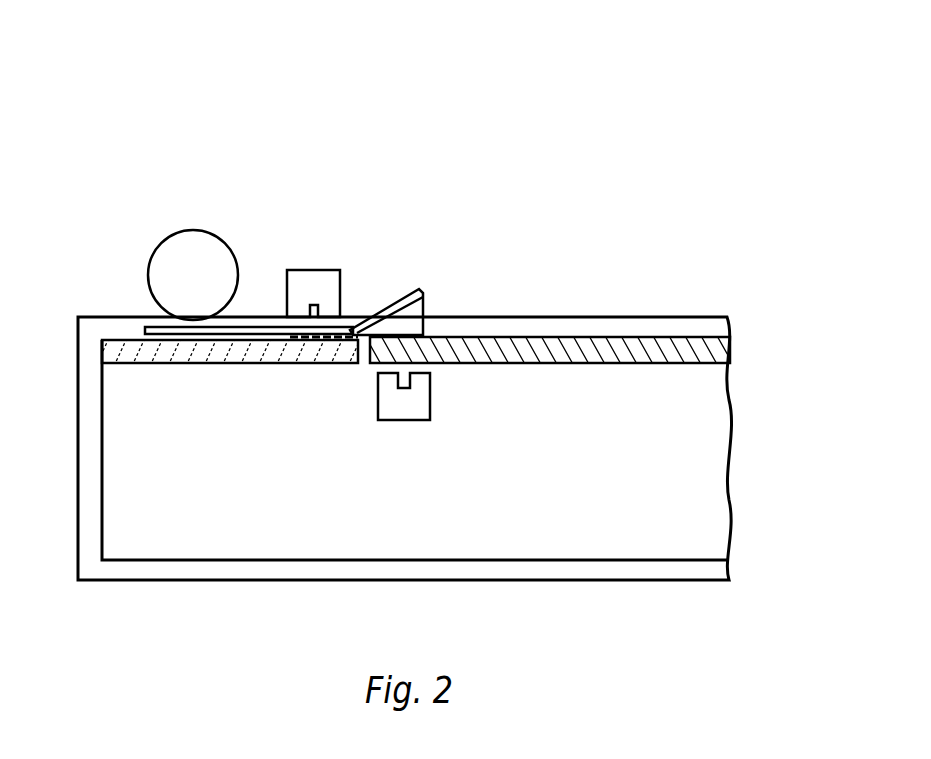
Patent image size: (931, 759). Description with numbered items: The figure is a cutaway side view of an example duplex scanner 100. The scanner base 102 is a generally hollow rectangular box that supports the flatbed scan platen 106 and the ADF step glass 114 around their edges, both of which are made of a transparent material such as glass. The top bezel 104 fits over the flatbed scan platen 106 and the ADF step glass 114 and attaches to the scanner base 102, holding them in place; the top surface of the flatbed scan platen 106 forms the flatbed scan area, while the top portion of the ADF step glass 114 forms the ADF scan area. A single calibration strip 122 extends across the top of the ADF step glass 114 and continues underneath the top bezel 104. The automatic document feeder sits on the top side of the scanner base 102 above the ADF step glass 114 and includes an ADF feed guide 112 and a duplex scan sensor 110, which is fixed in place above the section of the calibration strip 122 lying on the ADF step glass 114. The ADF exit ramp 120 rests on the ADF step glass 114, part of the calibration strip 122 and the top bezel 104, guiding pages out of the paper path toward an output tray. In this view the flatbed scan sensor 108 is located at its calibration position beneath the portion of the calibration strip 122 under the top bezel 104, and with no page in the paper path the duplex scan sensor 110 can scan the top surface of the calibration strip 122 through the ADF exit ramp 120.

The scanner 100 is at (450, 36).
The scanner base 102 is at (655, 473).
The top bezel 104 is at (425, 305).
The flatbed scan platen 106 is at (715, 357).
The flatbed scan sensor 108 is at (412, 410).
The duplex scan sensor 110 is at (327, 270).
The ADF feed guide 112 is at (178, 275).
The ADF step glass 114 is at (160, 363).
The ADF exit ramp 120 is at (388, 303).
The calibration strip 122 is at (313, 338).